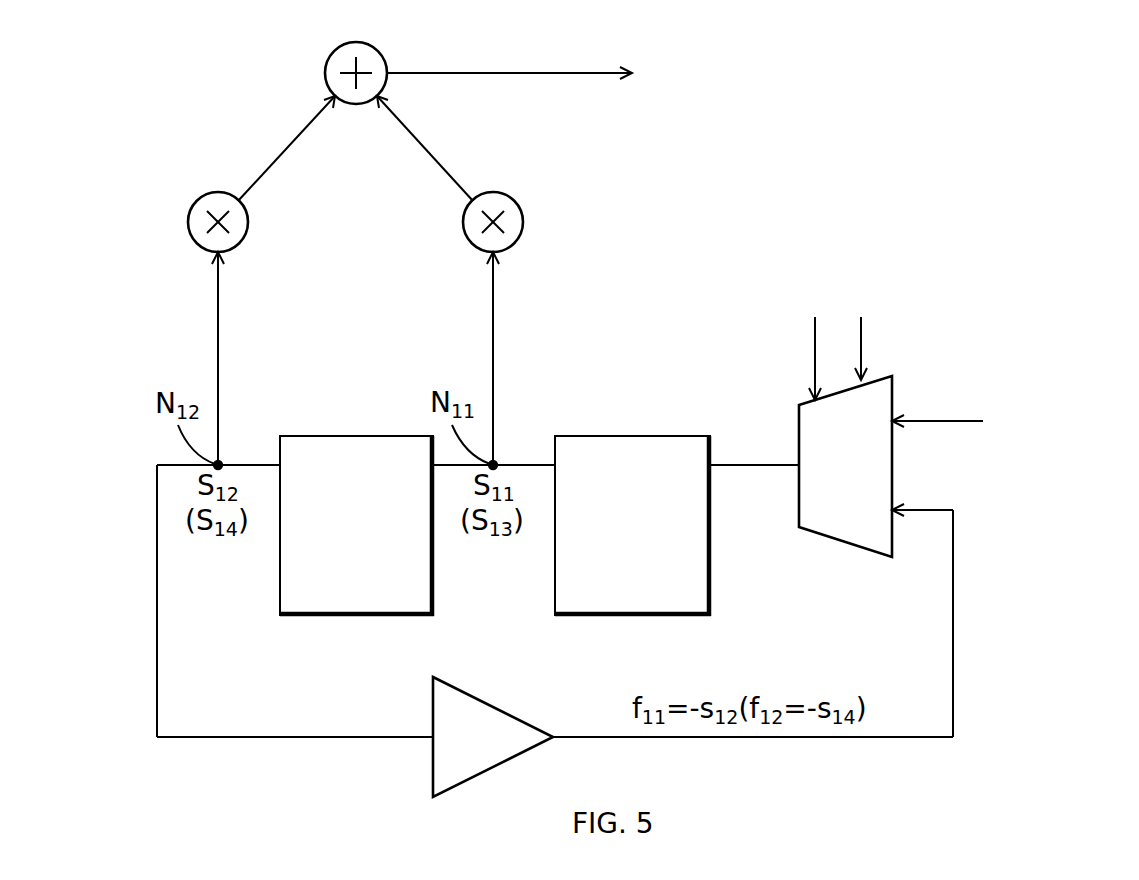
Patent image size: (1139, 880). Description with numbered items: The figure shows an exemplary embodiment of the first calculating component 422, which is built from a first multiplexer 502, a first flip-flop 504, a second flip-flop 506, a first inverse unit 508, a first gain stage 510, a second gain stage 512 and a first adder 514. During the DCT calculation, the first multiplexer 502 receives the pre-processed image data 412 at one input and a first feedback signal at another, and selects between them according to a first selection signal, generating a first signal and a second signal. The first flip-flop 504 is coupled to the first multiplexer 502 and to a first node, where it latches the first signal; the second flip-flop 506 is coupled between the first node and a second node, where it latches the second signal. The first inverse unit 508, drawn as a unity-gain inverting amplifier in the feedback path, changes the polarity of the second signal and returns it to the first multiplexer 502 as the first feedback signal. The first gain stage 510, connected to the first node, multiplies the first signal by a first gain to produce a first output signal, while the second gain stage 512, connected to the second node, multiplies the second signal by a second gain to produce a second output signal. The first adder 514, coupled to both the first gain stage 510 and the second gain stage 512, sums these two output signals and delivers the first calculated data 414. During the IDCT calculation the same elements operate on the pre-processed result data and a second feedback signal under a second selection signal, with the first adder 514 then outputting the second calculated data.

The first calculating component 422 is at (922, 102).
The first adder 514 is at (356, 55).
The second gain stage 512 is at (235, 174).
The first gain stage 510 is at (479, 174).
The second flip-flop 506 is at (310, 436).
The first flip-flop 504 is at (585, 436).
The first multiplexer 502 is at (845, 543).
The first inverse unit 508 is at (493, 703).
The first calculated data 414 is at (576, 74).
The pre-processed image data 412 is at (1004, 423).